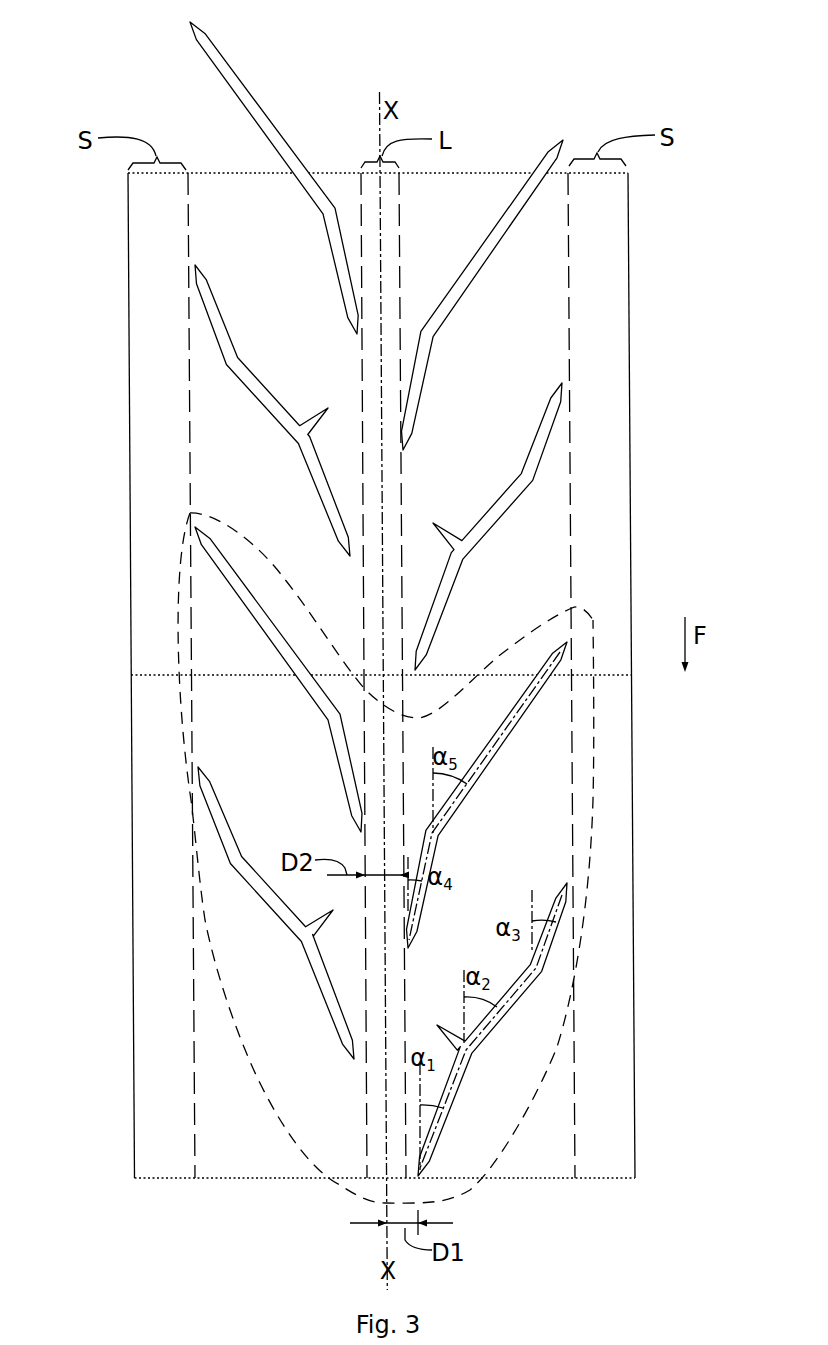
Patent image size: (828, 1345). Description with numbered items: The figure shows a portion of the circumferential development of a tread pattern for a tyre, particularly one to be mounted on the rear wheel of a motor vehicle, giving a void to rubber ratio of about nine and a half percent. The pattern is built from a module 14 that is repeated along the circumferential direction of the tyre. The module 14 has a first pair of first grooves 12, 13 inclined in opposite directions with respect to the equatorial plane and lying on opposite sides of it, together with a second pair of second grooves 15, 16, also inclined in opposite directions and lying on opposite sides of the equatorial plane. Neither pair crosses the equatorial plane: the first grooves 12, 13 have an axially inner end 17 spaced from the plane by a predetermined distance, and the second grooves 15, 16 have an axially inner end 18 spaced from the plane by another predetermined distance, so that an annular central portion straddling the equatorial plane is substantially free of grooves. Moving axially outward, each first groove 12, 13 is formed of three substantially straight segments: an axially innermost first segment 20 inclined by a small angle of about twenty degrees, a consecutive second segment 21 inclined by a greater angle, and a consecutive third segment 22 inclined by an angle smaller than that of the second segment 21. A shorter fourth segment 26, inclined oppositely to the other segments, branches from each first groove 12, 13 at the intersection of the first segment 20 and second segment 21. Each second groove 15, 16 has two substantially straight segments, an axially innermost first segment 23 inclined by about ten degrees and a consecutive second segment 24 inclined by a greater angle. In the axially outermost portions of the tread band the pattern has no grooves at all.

The first groove 12 is at (270, 413).
The first groove 13 is at (487, 532).
The module 14 is at (593, 620).
The second groove 15 is at (466, 282).
The second groove 16 is at (300, 186).
The axially inner end 17 is at (354, 1058).
The axially inner end 18 is at (350, 560).
The first substantially straight segment 20 is at (340, 1003).
The second substantially straight segment 21 is at (248, 890).
The third substantially straight segment 22 is at (217, 810).
The first substantially straight segment 23 is at (349, 752).
The second substantially straight segment 24 is at (522, 713).
The fourth substantially straight segment 26 is at (333, 908).